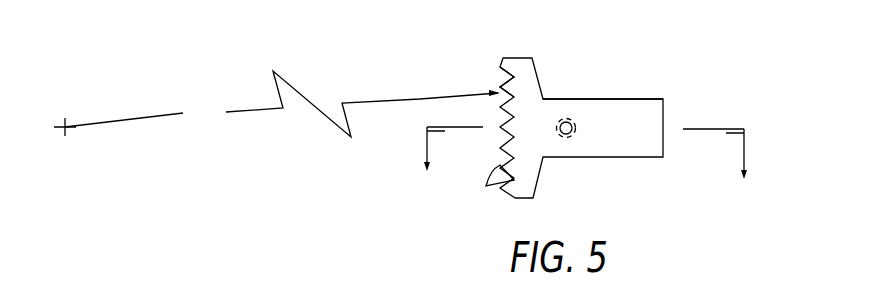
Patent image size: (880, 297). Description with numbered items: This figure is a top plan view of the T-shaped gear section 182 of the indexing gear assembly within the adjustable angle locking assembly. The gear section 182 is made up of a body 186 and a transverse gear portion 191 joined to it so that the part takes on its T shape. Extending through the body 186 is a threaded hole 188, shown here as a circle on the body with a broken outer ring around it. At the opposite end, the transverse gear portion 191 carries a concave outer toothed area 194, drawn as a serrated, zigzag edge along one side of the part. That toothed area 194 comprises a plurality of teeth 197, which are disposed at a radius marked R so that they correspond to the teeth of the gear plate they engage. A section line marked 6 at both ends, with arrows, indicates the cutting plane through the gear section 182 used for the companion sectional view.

The T-shaped gear section 182 is at (609, 104).
The body 186 is at (622, 93).
The threaded hole 188 is at (567, 134).
The transverse gear portion 191 is at (517, 54).
The concave outer toothed area 194 is at (494, 79).
The teeth 197 is at (486, 186).
The section line 6- 6 is at (585, 166).